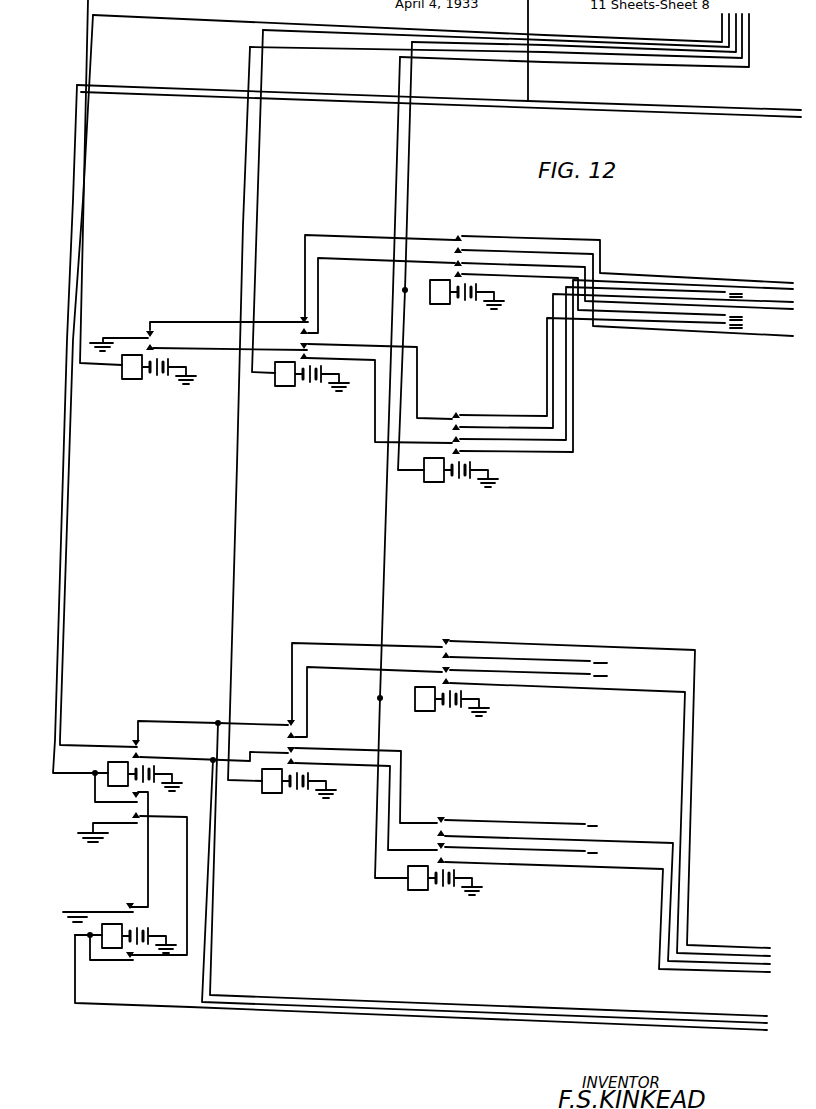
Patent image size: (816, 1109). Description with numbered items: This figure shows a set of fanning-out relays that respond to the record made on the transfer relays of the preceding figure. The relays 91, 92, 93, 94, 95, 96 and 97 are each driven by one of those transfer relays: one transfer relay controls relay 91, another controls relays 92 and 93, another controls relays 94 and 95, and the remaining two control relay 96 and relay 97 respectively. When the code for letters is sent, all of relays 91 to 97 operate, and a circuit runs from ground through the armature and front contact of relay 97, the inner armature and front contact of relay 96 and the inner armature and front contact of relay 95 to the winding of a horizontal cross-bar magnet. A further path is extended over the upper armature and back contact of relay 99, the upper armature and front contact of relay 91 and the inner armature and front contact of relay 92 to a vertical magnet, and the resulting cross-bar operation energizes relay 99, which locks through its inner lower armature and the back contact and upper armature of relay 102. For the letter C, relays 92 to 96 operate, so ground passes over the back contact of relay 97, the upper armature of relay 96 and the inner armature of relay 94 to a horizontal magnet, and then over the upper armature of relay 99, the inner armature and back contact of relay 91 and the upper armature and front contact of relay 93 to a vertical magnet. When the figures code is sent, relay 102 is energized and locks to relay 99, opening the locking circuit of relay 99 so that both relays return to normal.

The fanning-out relay 91 is at (269, 797).
The fanning-out relay 92 is at (425, 714).
The fanning-out relay 93 is at (420, 893).
The fanning-out relay 94 is at (440, 305).
The fanning-out relay 95 is at (434, 483).
The fanning-out relay 96 is at (283, 388).
The fanning-out relay 97 is at (133, 380).
The letters relay 99 is at (106, 764).
The figures relay 102 is at (75, 934).